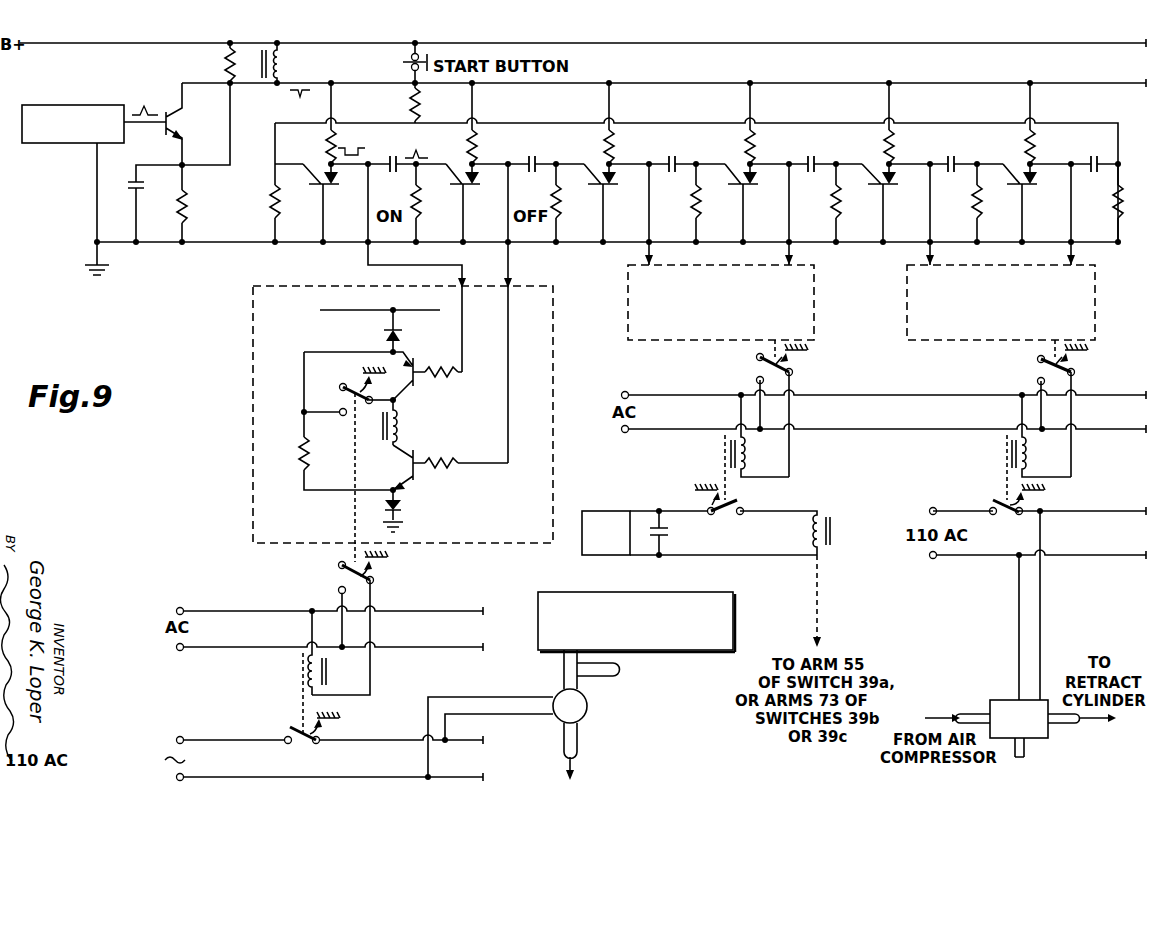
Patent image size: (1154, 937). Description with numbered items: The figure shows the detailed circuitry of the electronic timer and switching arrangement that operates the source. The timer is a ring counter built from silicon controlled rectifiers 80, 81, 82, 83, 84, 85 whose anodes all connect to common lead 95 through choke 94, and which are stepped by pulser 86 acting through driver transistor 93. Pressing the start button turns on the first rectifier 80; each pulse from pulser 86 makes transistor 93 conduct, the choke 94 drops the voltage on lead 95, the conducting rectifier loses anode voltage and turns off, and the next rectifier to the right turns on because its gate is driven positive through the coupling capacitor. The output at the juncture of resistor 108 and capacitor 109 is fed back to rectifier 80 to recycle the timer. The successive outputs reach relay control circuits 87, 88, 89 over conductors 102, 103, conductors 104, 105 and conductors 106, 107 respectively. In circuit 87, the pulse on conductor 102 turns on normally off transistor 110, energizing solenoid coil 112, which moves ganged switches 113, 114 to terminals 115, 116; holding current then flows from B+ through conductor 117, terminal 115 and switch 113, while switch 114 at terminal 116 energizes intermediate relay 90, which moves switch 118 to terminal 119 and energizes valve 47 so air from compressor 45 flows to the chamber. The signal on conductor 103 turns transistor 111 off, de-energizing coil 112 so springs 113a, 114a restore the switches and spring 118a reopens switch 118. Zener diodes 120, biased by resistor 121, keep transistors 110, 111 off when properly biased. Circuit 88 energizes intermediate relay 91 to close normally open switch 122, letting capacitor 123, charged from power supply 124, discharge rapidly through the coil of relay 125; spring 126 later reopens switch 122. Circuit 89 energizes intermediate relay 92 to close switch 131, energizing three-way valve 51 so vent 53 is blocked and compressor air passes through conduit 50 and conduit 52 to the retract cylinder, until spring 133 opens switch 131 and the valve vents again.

The pulser 86 is at (43, 105).
The transistor 93 is at (177, 108).
The choke 94 is at (281, 67).
The common lead 95 is at (331, 83).
The silicon controlled rectifier 80 is at (326, 155).
The silicon controlled rectifier 81 is at (466, 155).
The silicon controlled rectifier 82 is at (603, 155).
The silicon controlled rectifier 83 is at (741, 155).
The silicon controlled rectifier 84 is at (881, 155).
The silicon controlled rectifier 85 is at (1021, 155).
The capacitor 109 is at (1100, 154).
The resistor 108 is at (1117, 210).
The conductor 102 is at (368, 265).
The conductor 103 is at (508, 263).
The conductor 104 is at (649, 222).
The conductor 105 is at (789, 222).
The conductor 106 is at (930, 222).
The conductor 107 is at (1071, 211).
The relay control circuit 87 is at (253, 295).
The relay control circuit 88 is at (628, 287).
The relay control circuit 89 is at (907, 287).
The Zener diodes 120 is at (401, 338).
The conductor 117 is at (304, 352).
The transistor 110 is at (415, 380).
The solenoid coil 112 is at (401, 427).
The transistor 111 is at (413, 454).
The switch 113 is at (340, 390).
The spring 113a is at (362, 377).
The terminal 115 is at (343, 416).
The resistor 121 is at (304, 452).
The switch 114 is at (339, 570).
The spring 114a is at (376, 568).
The terminal 116 is at (339, 593).
The intermediate relay 90 is at (300, 680).
The intermediate relay 91 is at (718, 462).
The intermediate relay 92 is at (1002, 462).
The switch 118 is at (296, 728).
The spring 118a is at (328, 729).
The terminal 119 is at (287, 745).
The power supply 124 is at (600, 556).
The capacitor 123 is at (667, 533).
The switch 122 is at (738, 504).
The spring 126 is at (712, 503).
The relay 125 is at (832, 532).
The switch 131 is at (995, 504).
The spring 133 is at (1026, 500).
The air compressor 45 is at (645, 652).
The valve 47 is at (588, 706).
The conduit 50 is at (975, 713).
The three-way valve 51 is at (1005, 700).
The conduit 52 is at (1062, 724).
The vent 53 is at (1020, 757).